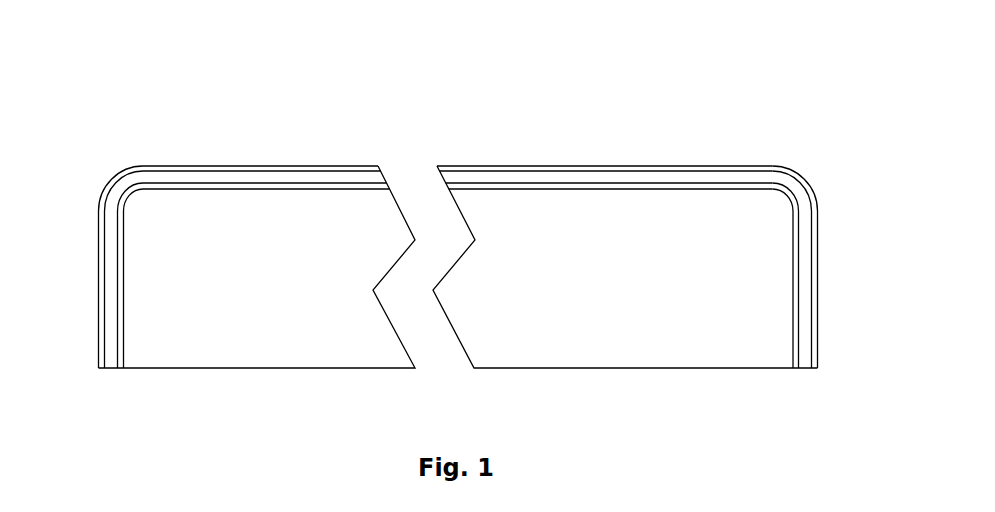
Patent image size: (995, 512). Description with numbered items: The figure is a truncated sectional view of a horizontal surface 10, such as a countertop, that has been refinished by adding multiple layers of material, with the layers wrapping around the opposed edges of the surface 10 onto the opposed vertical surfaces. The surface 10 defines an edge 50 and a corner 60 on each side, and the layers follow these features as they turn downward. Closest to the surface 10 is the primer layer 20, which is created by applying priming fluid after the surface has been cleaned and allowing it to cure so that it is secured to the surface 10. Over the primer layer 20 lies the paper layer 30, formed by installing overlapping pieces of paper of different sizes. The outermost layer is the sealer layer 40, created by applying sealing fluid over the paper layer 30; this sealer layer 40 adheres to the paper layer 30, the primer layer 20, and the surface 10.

The surface 10 is at (518, 189).
The primer layer 20 is at (605, 182).
The paper layer 30 is at (676, 169).
The sealer layer 40 is at (762, 165).
The edge 50 is at (122, 275).
The corner 60 is at (105, 168).